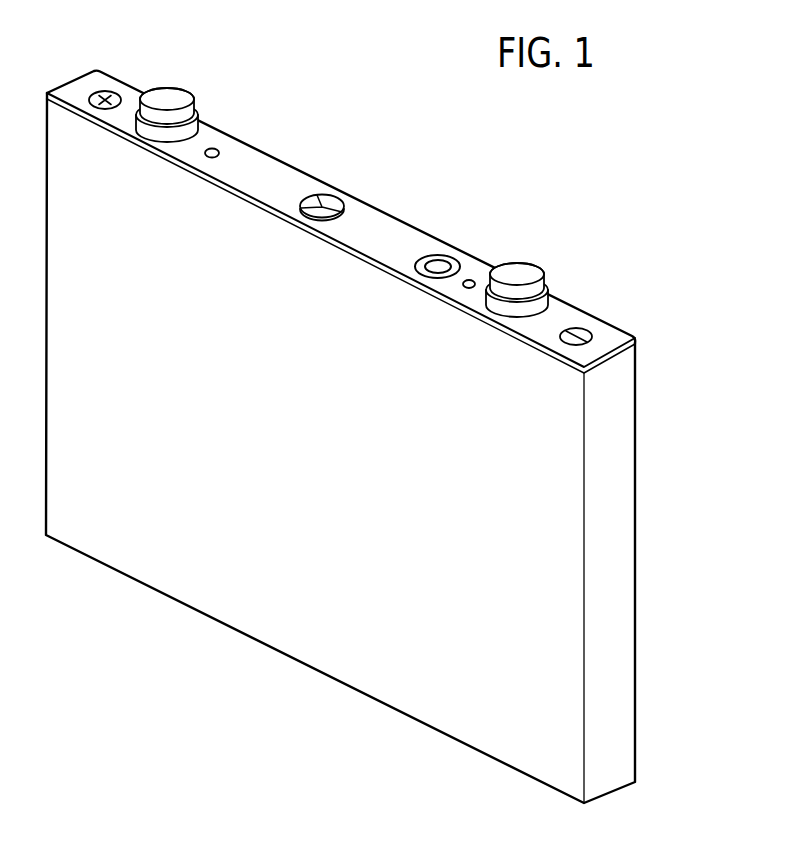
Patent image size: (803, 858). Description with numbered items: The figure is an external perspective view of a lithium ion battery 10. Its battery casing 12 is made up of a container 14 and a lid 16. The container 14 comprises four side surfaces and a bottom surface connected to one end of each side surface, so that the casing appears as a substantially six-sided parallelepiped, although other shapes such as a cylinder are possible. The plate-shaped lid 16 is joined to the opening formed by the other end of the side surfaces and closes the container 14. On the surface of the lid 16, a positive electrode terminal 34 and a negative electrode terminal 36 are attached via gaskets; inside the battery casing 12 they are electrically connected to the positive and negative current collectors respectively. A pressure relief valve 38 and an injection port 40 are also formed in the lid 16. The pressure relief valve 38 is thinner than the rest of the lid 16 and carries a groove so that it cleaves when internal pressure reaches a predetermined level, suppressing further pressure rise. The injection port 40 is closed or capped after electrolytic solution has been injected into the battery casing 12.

The lithium ion battery 10 is at (602, 130).
The battery casing 12 is at (688, 303).
The container 14 is at (627, 379).
The lid 16 is at (612, 336).
The positive electrode terminal 34 is at (168, 95).
The negative electrode terminal 36 is at (522, 272).
The pressure relief valve 38 is at (327, 202).
The injection port 40 is at (439, 258).